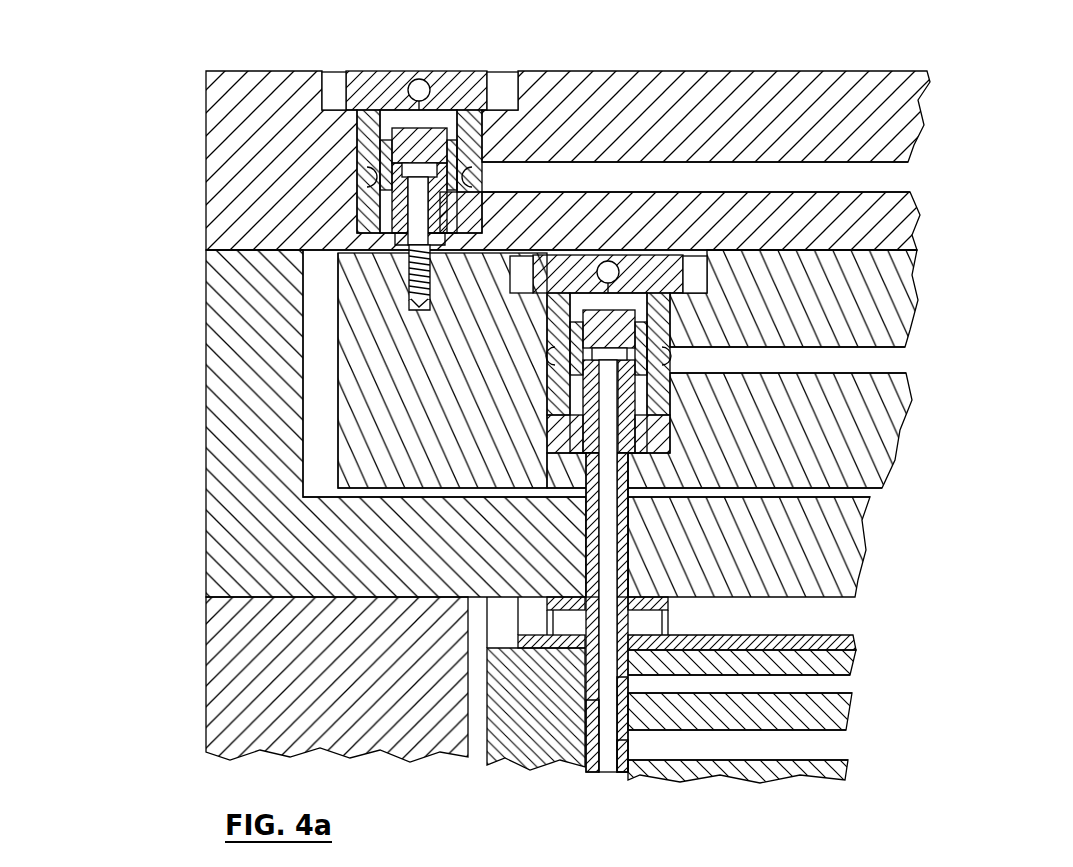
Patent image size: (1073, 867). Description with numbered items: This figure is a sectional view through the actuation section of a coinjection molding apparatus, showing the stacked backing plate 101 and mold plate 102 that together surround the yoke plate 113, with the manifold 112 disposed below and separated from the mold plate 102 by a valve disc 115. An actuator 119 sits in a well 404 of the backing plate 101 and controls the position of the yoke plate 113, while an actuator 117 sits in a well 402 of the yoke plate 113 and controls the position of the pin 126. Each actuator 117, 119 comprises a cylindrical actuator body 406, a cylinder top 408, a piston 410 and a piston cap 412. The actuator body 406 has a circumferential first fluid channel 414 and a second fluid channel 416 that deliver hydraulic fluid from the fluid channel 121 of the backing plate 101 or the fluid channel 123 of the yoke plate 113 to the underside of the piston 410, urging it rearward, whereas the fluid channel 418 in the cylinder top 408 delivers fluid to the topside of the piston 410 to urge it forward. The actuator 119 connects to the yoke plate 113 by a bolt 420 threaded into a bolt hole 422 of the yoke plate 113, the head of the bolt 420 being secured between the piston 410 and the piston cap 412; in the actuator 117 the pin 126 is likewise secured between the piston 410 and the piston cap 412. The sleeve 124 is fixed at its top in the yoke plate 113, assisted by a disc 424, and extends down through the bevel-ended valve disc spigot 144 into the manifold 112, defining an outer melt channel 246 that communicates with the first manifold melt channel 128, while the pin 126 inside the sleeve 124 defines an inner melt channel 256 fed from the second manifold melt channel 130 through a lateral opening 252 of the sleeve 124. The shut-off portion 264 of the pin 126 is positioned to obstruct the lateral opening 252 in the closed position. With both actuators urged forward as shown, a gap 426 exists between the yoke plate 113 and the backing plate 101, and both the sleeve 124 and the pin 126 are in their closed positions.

The backing plate 101 is at (206, 176).
The mold plate 102 is at (206, 410).
The manifold 112 is at (483, 723).
The yoke plate 113 is at (303, 347).
The valve disc 115 is at (548, 607).
The actuator 117 is at (751, 354).
The actuator 119 is at (349, 68).
The fluid channel 121 is at (906, 177).
The fluid channel 123 is at (890, 358).
The sleeve 124 is at (630, 515).
The pin 126 is at (630, 572).
The first manifold melt channel 128 is at (840, 738).
The second manifold melt channel 130 is at (840, 675).
The valve disc spigot 144 is at (588, 745).
The outer melt channel 246 is at (628, 773).
The lateral opening 252 is at (623, 677).
The inner melt channel 256 is at (602, 772).
The shut-off portion 264 is at (612, 677).
The well 402 is at (521, 280).
The well 404 is at (377, 126).
The actuator body 406 is at (372, 128).
The cylinder top 408 is at (467, 86).
The piston 410 is at (368, 158).
The piston cap 412 is at (398, 70).
The first fluid channel 414 is at (360, 185).
The second fluid channel 416 is at (470, 200).
The fluid channel 418 is at (421, 79).
The bolt 420 is at (410, 265).
The bolt hole 422 is at (408, 302).
The disc 424 is at (741, 434).
The gap 426 is at (906, 250).